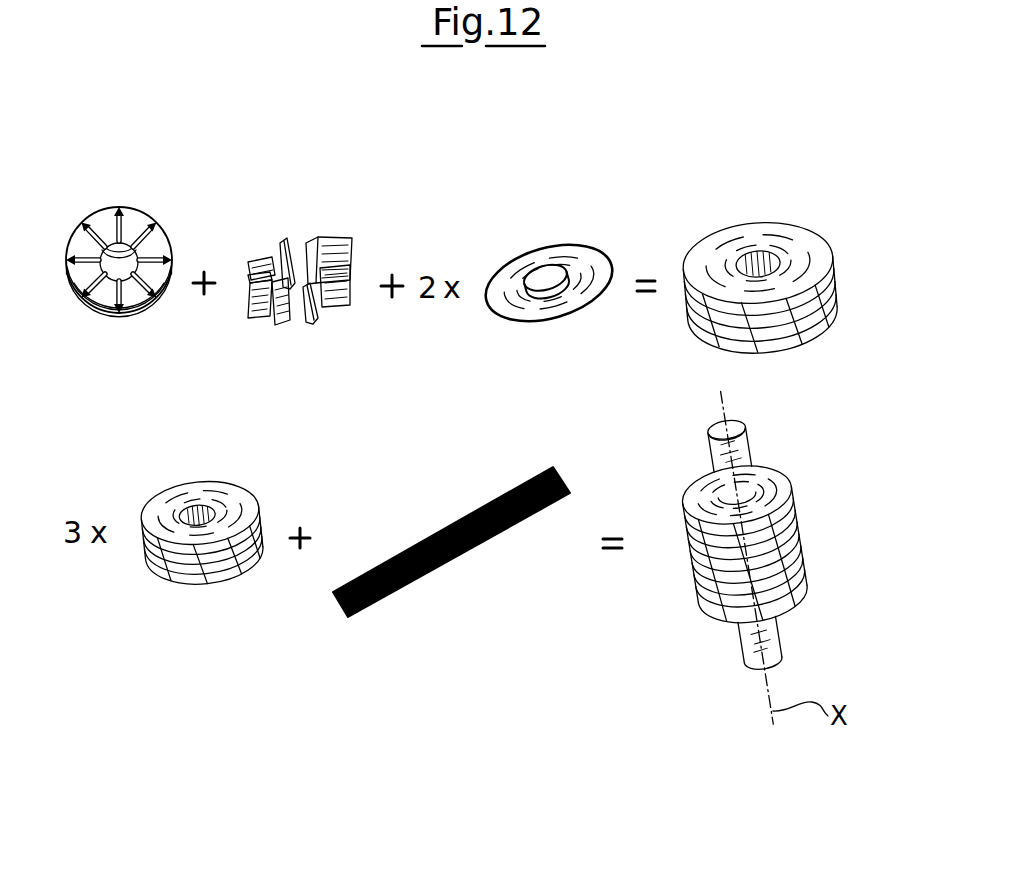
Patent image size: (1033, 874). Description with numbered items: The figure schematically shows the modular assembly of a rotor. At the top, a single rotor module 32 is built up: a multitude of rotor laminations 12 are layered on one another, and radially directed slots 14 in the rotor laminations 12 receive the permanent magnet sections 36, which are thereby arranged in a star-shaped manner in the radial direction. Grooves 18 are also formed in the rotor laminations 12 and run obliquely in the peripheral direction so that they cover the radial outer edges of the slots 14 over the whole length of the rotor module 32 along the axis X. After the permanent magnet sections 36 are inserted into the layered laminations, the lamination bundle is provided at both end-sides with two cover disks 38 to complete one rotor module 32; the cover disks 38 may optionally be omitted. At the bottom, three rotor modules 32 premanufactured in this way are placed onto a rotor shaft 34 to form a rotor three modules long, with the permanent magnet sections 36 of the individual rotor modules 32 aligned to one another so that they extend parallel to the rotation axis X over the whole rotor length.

The rotor laminations 12 is at (172, 264).
The slots 14 is at (161, 256).
The grooves 18 is at (84, 318).
The permanent magnet sections 36 is at (292, 238).
The cover disks 38 is at (576, 247).
The rotor module 32 is at (800, 230).
The rotor shaft 34 is at (410, 582).